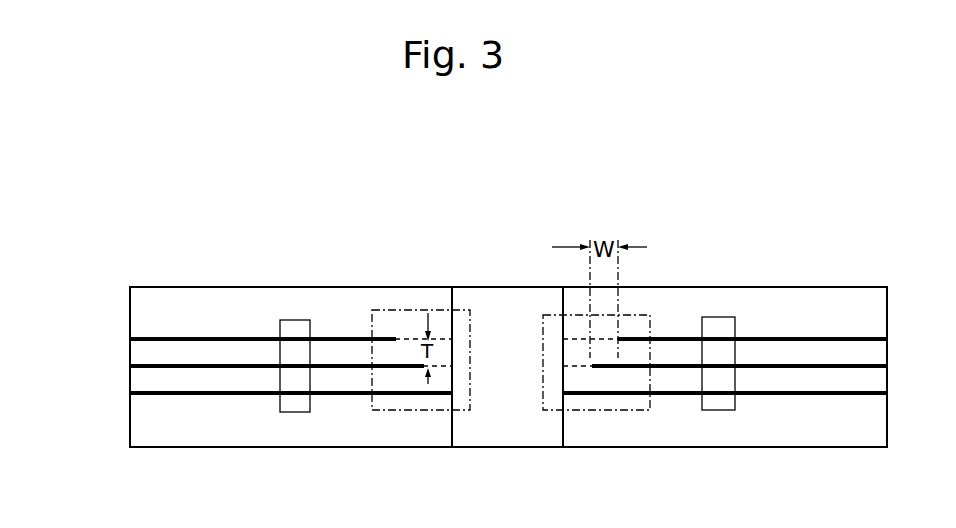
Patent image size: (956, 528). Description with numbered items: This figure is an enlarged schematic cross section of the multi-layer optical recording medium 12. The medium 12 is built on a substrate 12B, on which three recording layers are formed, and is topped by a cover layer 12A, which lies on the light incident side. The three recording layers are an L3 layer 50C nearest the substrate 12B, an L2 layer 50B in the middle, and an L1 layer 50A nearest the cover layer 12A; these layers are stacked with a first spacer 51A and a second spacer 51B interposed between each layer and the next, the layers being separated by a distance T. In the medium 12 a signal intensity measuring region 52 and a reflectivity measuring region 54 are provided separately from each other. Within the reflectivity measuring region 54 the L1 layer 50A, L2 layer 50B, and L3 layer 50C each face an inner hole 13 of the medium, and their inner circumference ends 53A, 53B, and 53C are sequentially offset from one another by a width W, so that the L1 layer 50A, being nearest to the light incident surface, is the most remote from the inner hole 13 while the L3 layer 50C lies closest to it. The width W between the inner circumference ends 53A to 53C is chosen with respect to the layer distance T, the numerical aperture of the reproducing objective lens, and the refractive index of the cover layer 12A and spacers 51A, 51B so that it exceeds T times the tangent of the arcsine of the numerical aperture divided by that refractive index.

The multi-layer optical recording medium 12 is at (243, 278).
The cover layer 12A is at (177, 298).
The substrate 12B is at (187, 441).
The inner hole 13 is at (500, 287).
The L1 layer 50A is at (128, 339).
The L2 layer 50B is at (128, 367).
The L3 layer 50C is at (128, 396).
The first spacer 51A is at (128, 380).
The second spacer 51B is at (128, 357).
The signal intensity measuring region 52 is at (297, 320).
The inner circumference end of the L1 layer 53A is at (395, 340).
The inner circumference end of the L2 layer 53B is at (428, 366).
The inner circumference end of the L3 layer 53C is at (450, 395).
The reflectivity measuring region 54 is at (376, 310).